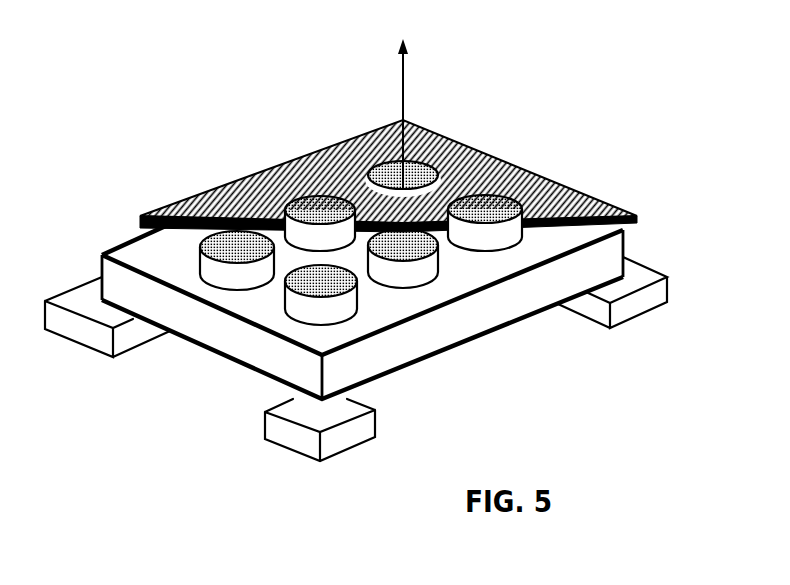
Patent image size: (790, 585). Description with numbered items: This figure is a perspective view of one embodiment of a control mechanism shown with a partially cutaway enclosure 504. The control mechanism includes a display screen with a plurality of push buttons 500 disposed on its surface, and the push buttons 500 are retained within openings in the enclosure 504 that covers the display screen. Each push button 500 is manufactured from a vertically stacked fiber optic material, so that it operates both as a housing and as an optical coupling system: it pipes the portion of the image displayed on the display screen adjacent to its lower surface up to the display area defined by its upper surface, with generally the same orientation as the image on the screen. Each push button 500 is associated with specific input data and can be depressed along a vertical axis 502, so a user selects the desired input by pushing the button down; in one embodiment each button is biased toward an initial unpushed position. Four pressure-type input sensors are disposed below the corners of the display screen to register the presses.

The push buttons 500 is at (297, 312).
The vertical axis 502 is at (407, 100).
The enclosure 504 is at (583, 192).